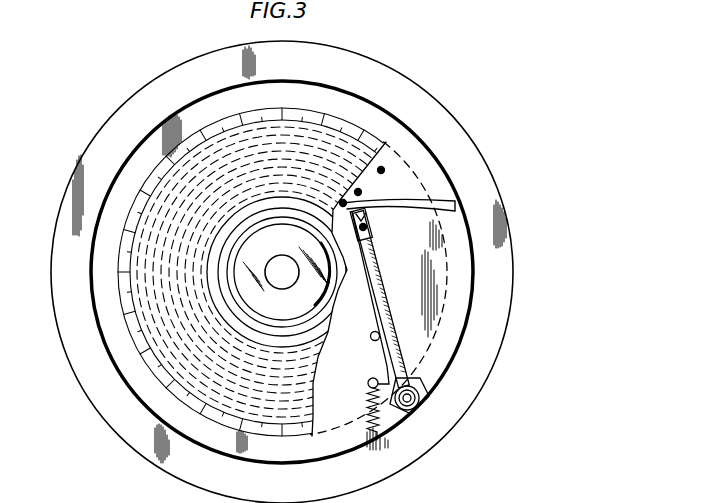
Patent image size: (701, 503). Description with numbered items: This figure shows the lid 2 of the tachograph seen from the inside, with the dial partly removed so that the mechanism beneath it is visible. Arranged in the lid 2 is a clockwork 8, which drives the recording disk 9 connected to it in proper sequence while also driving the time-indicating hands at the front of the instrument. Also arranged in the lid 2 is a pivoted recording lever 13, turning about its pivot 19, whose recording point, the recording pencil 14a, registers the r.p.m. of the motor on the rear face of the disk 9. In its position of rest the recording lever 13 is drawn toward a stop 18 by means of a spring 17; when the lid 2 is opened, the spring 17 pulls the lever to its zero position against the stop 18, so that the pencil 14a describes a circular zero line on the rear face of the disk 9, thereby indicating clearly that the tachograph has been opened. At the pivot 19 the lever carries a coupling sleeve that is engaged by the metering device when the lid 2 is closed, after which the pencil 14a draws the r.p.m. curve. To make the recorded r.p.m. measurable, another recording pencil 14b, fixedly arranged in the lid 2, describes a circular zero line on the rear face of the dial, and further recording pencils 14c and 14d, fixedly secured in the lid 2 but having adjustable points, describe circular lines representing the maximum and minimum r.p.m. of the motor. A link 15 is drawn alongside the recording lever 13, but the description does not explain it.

The hinged lid 2 is at (70, 349).
The clockwork 8 is at (301, 318).
The recording disk 9 is at (268, 420).
The recording lever 13 is at (383, 291).
The recording pencil 14a is at (367, 229).
The recording pencil 14b is at (348, 206).
The recording pencil 14c is at (362, 192).
The recording pencil 14d is at (384, 169).
The lever 15 is at (368, 298).
The spring 17 is at (370, 402).
The stop 18 is at (371, 334).
The pivot 19 is at (415, 387).